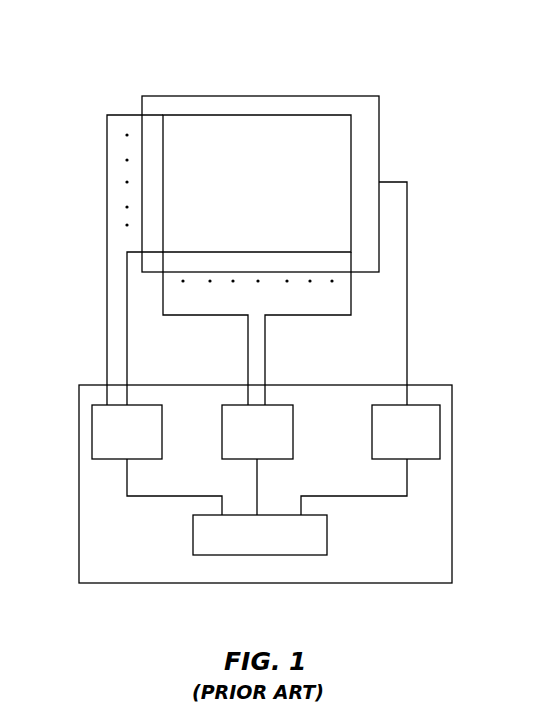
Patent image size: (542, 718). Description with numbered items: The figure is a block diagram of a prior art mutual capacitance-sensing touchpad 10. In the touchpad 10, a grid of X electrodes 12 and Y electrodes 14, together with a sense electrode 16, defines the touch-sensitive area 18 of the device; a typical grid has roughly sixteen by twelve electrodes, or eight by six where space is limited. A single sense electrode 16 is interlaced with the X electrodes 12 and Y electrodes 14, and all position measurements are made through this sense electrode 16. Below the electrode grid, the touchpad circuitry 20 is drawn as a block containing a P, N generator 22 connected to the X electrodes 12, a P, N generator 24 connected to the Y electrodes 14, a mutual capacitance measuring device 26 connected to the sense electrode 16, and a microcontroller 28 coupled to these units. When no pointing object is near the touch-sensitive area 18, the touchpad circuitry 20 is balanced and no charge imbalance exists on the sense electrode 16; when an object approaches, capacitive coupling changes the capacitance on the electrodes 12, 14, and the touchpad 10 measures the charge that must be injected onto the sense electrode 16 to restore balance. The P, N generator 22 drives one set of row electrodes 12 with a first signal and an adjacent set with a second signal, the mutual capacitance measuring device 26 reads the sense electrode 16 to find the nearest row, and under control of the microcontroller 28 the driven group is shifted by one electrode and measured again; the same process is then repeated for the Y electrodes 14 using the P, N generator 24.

The touchpad 10 is at (362, 86).
The X electrodes 12 is at (118, 258).
The Y electrodes 14 is at (355, 331).
The sense electrode 16 is at (407, 193).
The touch-sensitive area 18 is at (470, 82).
The touchpad circuitry 20 is at (452, 491).
The P, N generator 22 is at (91, 427).
The P, N generator 24 is at (293, 436).
The mutual capacitance measuring device 26 is at (370, 437).
The microcontroller 28 is at (327, 533).